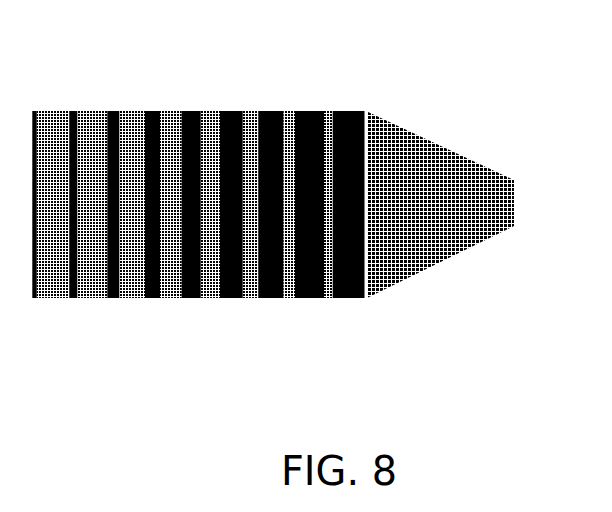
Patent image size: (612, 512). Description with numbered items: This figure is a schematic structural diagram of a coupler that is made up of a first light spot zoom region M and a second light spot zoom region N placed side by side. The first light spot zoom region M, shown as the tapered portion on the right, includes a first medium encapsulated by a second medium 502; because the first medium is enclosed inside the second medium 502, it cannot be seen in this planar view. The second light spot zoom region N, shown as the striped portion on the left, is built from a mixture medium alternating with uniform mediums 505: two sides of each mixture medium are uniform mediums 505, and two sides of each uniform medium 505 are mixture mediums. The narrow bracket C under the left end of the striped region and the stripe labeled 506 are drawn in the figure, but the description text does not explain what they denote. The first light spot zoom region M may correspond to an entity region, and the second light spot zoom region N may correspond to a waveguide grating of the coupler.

The second medium 502 is at (460, 238).
The uniform medium 505 is at (166, 288).
The high-index layer 506 is at (196, 300).
The second light spot zoom region N is at (368, 89).
The first light spot zoom region M is at (508, 89).
The grating period C is at (72, 303).